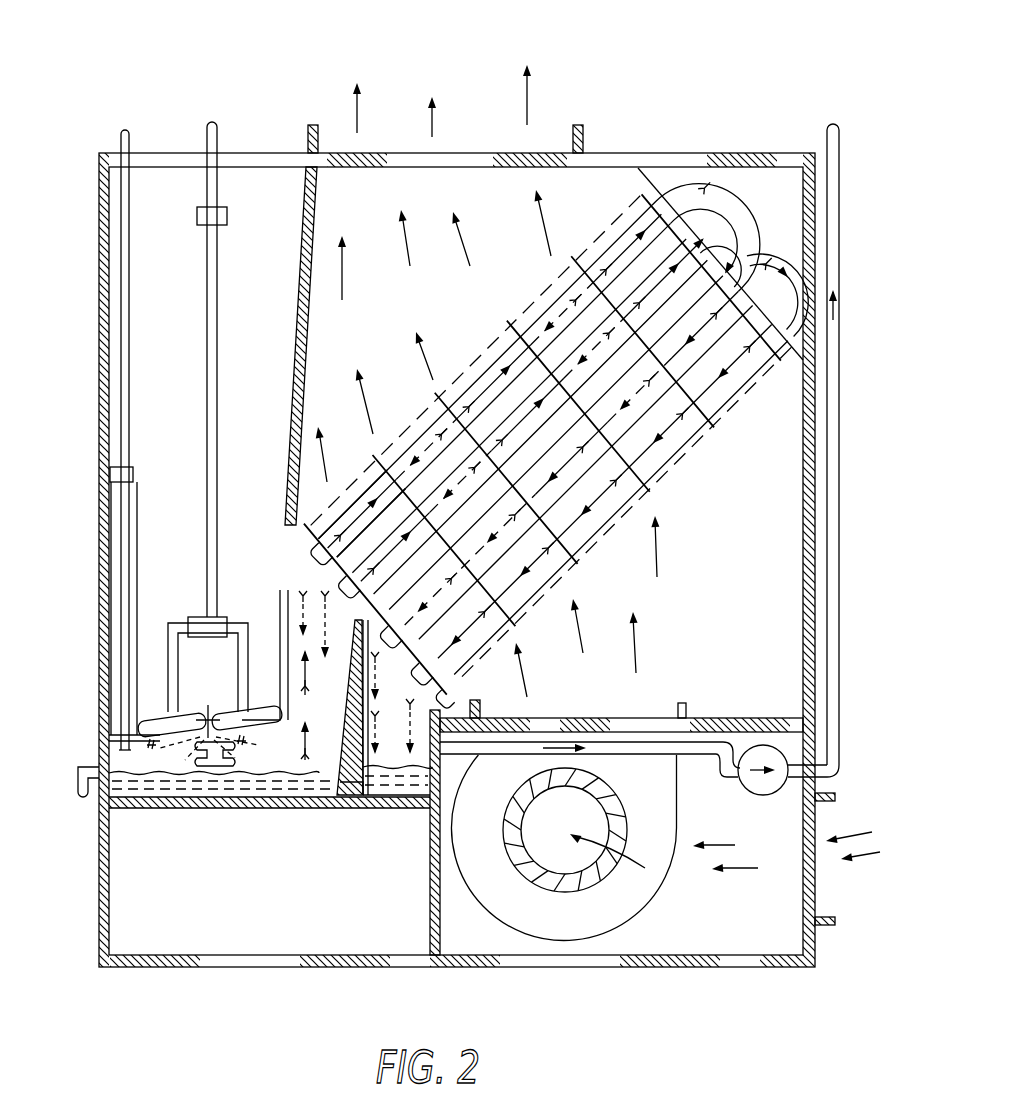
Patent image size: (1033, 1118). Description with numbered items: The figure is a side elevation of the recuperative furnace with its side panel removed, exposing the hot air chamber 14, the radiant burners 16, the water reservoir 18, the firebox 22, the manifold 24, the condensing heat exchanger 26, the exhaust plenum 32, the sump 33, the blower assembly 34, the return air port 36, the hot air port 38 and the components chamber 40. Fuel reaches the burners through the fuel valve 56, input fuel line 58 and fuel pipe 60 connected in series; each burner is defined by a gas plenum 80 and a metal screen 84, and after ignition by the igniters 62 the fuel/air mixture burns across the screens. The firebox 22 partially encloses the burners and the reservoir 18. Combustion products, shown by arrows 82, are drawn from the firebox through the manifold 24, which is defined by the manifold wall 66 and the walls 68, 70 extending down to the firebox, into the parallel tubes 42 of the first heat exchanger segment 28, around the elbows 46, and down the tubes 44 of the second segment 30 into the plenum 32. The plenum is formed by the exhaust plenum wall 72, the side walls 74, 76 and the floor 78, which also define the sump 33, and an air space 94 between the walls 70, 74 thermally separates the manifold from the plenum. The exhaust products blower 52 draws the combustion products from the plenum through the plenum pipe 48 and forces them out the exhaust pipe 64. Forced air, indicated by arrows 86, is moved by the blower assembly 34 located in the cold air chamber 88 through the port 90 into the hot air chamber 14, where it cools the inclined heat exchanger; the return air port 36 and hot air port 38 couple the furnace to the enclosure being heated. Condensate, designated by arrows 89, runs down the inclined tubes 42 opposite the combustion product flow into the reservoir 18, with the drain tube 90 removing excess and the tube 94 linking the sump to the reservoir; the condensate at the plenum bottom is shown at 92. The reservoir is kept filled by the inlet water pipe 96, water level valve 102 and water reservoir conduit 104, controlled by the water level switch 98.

The hot air chamber 14 is at (742, 529).
The radiant burners 16 is at (152, 712).
The water reservoir 18 is at (248, 778).
The firebox 22 is at (172, 768).
The manifold 24 is at (298, 645).
The condensing heat exchanger 26 is at (748, 414).
The first heat exchanger segment 28 is at (474, 358).
The second heat exchanger segment 30 is at (606, 537).
The exhaust plenum 32 is at (415, 760).
The sump 33 is at (388, 780).
The blower assembly 34 is at (633, 895).
The return air port 36 is at (818, 878).
The hot air port 38 is at (338, 153).
The components chamber 40 is at (147, 380).
The first segment tubes 42 is at (302, 562).
The second segment tubes 44 is at (444, 667).
The elbows 46 is at (725, 243).
The plenum pipe 48 is at (693, 760).
The exhaust products blower 52 is at (764, 790).
The fuel valve 56 is at (228, 215).
The input fuel line 58 is at (214, 122).
The fuel pipe 60 is at (216, 302).
The igniters 62 is at (215, 762).
The exhaust pipe 64 is at (832, 124).
The manifold wall 66 is at (330, 598).
The manifold wall 68 is at (288, 680).
The manifold wall 70 is at (356, 745).
The exhaust plenum wall 72 is at (443, 710).
The plenum side wall 74 is at (373, 715).
The plenum side wall 76 is at (436, 770).
The floor 78 is at (436, 784).
The gas plenum 80 is at (208, 712).
The arrows 82 is at (362, 525).
The metal screen 84 is at (258, 742).
The arrows 86 is at (846, 828).
The cold air chamber 88 is at (737, 927).
The arrows 89 is at (430, 445).
The port 90 is at (78, 766).
The baffle edge 92 is at (350, 792).
The air space 94 is at (357, 797).
The inlet water pipe 96 is at (124, 130).
The water level switch 98 is at (98, 790).
The water level valve 102 is at (136, 468).
The water reservoir conduit 104 is at (118, 538).